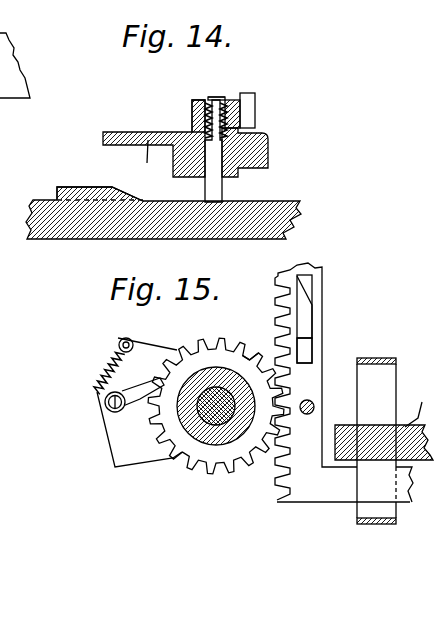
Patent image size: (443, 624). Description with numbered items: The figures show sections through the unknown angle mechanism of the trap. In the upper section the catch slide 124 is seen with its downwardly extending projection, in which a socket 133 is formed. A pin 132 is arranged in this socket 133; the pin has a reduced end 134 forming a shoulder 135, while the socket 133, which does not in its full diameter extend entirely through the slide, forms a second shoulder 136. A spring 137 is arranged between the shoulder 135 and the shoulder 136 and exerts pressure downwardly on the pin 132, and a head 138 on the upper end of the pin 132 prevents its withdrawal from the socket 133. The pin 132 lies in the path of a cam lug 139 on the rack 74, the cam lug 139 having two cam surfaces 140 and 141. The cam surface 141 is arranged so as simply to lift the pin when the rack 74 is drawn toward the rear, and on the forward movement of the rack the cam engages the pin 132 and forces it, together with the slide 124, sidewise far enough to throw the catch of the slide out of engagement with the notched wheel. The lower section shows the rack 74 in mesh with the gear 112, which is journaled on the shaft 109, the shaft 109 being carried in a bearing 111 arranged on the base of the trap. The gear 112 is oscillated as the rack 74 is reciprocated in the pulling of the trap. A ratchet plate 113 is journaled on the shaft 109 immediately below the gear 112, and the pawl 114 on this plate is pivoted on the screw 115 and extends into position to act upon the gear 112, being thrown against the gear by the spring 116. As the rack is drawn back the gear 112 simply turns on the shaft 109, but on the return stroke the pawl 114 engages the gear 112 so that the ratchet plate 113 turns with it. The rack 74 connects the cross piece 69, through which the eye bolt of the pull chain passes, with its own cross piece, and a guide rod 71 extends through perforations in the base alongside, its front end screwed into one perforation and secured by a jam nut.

In FIG. 14, the rack 74 is at (293, 210).
In FIG. 15, the rack 74 is at (310, 267).
In FIG. 14, the catch slide 124 is at (193, 103).
In FIG. 14, the pin 132 is at (220, 192).
In FIG. 15, the pin 132 is at (312, 402).
In FIG. 14, the socket 133 is at (227, 130).
In FIG. 14, the reduced end 134 is at (238, 100).
In FIG. 14, the shoulder 135 is at (223, 146).
In FIG. 14, the shoulder 136 is at (212, 99).
In FIG. 14, the spring 137 is at (193, 118).
In FIG. 14, the head 138 is at (225, 97).
In FIG. 14, the cam lug 139 is at (87, 187).
In FIG. 15, the cam lug 139 is at (302, 315).
In FIG. 14, the cam surface 140 is at (247, 105).
In FIG. 15, the cam surface 140 is at (305, 348).
In FIG. 15, the cam surface 141 is at (305, 287).
In FIG. 15, the guide rod 71 is at (384, 441).
In FIG. 15, the cross piece 69 is at (345, 484).
In FIG. 15, the shaft 109 is at (208, 432).
In FIG. 15, the bearing 111 is at (212, 372).
In FIG. 15, the gear 112 is at (247, 467).
In FIG. 15, the ratchet plate 113 is at (139, 402).
In FIG. 15, the pawl 114 is at (140, 400).
In FIG. 15, the screw 115 is at (104, 404).
In FIG. 15, the spring 116 is at (103, 375).